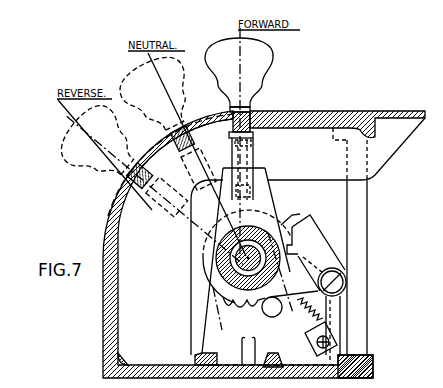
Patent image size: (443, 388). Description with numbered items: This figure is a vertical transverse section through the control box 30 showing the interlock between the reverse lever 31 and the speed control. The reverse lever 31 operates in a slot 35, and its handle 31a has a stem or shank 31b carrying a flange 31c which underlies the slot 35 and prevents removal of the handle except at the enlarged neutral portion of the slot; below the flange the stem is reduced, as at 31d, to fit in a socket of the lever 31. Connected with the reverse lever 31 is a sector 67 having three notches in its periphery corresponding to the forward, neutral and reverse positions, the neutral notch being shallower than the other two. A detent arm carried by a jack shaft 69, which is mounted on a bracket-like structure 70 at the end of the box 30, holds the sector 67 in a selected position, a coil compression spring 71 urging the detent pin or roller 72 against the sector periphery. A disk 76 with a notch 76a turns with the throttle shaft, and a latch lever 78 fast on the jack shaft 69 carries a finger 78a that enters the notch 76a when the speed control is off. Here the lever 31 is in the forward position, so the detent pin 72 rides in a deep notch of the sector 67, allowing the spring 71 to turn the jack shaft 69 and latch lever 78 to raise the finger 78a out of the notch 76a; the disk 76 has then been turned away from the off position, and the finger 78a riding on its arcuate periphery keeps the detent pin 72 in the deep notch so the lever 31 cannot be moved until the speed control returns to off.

The box 30 is at (321, 108).
The reverse lever 31 is at (255, 153).
The handle 31a is at (270, 58).
The stem or shank 31b is at (252, 114).
The flange 31c is at (256, 135).
The reduced portion of handle stem 31d is at (250, 160).
The slot 35 is at (220, 118).
The sector 67 is at (215, 301).
The jack shaft 69 is at (341, 285).
The bracket-like structure 70 is at (345, 320).
The coil compression spring 71 is at (308, 325).
The detent pin or roller 72 is at (276, 316).
The disk 76 is at (204, 262).
The notch 76a is at (295, 253).
The latch lever 78 is at (312, 226).
The finger 78a is at (288, 222).